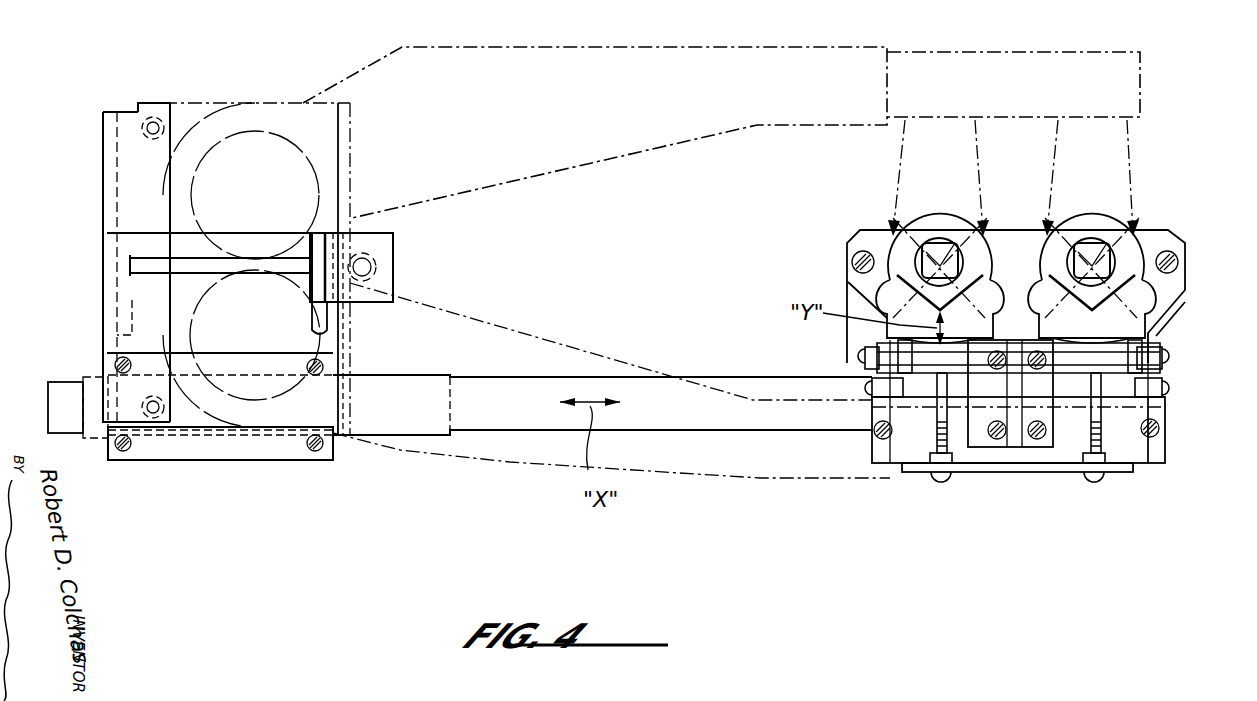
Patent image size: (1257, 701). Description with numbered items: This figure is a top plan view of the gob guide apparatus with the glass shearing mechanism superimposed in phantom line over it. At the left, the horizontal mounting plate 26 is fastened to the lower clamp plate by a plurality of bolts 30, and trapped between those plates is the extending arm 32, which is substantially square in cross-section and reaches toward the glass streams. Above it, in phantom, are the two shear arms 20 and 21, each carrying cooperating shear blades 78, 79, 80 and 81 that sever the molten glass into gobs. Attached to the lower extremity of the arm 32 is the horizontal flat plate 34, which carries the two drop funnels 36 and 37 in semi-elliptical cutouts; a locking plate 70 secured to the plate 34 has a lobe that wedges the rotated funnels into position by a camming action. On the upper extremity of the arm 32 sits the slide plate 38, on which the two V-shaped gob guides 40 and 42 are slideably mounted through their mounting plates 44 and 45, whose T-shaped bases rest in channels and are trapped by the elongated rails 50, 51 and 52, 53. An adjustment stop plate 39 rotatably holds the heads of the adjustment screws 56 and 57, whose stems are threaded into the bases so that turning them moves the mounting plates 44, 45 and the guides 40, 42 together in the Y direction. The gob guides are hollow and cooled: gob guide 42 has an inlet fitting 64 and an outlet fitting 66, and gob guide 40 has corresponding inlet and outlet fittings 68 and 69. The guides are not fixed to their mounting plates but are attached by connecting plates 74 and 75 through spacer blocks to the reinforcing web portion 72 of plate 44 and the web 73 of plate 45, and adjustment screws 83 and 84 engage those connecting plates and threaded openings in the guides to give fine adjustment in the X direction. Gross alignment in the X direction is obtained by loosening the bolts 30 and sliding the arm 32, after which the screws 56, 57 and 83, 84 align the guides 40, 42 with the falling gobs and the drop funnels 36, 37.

The extending arm 20 is at (716, 478).
The extending arm 21 is at (790, 10).
The horizontal mounting plate 26 is at (232, 455).
The bolts 30 is at (115, 366).
The extending arm 32 is at (468, 418).
The horizontal flat plate 34 is at (1162, 309).
The drop funnel 36 is at (1108, 180).
The drop funnel 37 is at (952, 180).
The slide plate 38 is at (1150, 455).
The adjustment stop plate 39 is at (1118, 472).
The V-shaped gob guide 40 is at (1143, 290).
The V-shaped gob guide 42 is at (885, 289).
The mounting plate 44 is at (1098, 372).
The mounting plate 45 is at (933, 372).
The elongated rail 50 is at (1155, 441).
The elongated rail 51 is at (1048, 447).
The elongated rail 52 is at (875, 440).
The elongated rail 53 is at (1000, 450).
The adjustment screw 56 is at (935, 480).
The adjustment screw 57 is at (1095, 480).
The inlet fitting 64 is at (978, 353).
The outlet fitting 66 is at (880, 372).
The inlet fitting 68 is at (1165, 385).
The outlet fitting 69 is at (1048, 335).
The locking plate 70 is at (1186, 252).
The reinforcing web portion 72 is at (1077, 447).
The web 73 is at (937, 413).
The connecting plate 74 is at (1160, 366).
The connecting plate 75 is at (866, 364).
The shear blade 78 is at (977, 137).
The shear blade 79 is at (966, 230).
The shear blade 80 is at (1132, 137).
The shear blade 81 is at (1118, 230).
The adjustment screw 83 is at (1162, 351).
The adjustment screw 84 is at (872, 351).